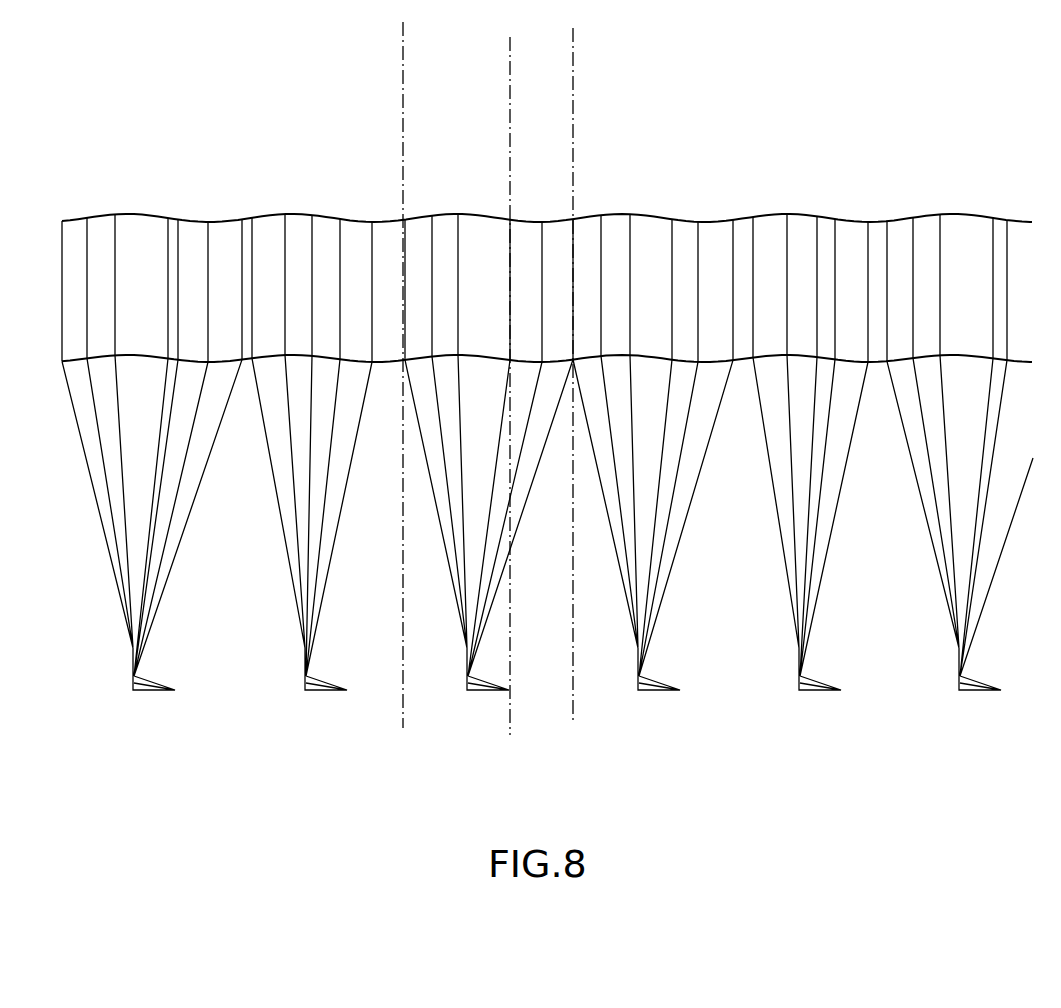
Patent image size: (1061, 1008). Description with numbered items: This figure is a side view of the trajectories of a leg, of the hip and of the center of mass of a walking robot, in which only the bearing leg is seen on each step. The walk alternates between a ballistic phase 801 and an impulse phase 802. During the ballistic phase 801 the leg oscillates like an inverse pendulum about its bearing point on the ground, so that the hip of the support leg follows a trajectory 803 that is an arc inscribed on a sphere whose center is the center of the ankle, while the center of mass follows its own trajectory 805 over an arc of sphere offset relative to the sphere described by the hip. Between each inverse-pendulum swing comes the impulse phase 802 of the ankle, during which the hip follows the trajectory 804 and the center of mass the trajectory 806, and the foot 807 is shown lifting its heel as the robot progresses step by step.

The ballistic phase 801 is at (440, 375).
The impulse phase 802 is at (540, 386).
The trajectory of the hip of the support leg during the ballistic phase 803 is at (440, 362).
The trajectory of the hip of the support leg during the impulse phase 804 is at (548, 365).
The trajectory of the COM during the ballistic phase 805 is at (418, 213).
The trajectory of the COM during the impulse phase 806 is at (550, 218).
The foot during the impulse phase 807 is at (488, 682).